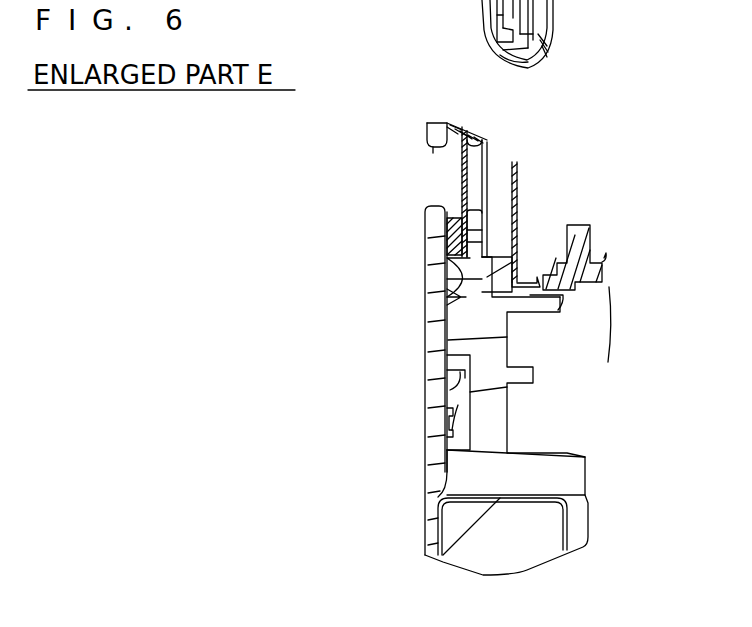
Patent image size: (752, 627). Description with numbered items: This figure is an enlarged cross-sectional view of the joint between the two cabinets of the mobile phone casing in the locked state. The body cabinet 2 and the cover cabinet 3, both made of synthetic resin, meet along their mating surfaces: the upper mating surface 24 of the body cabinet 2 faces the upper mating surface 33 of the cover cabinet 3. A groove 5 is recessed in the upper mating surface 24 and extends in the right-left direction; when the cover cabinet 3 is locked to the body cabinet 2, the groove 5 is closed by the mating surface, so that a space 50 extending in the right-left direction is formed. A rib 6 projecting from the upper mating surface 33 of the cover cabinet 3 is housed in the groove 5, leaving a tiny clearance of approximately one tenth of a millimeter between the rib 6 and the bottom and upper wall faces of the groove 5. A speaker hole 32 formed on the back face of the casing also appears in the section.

The body cabinet 2 is at (568, 458).
The cover cabinet 3 is at (425, 370).
The groove 5 is at (472, 418).
The rib 6 is at (463, 372).
The upper mating surface 24 is at (447, 313).
The speaker hole 32 is at (433, 155).
The upper mating surface 33 is at (453, 262).
The space 50 is at (453, 410).